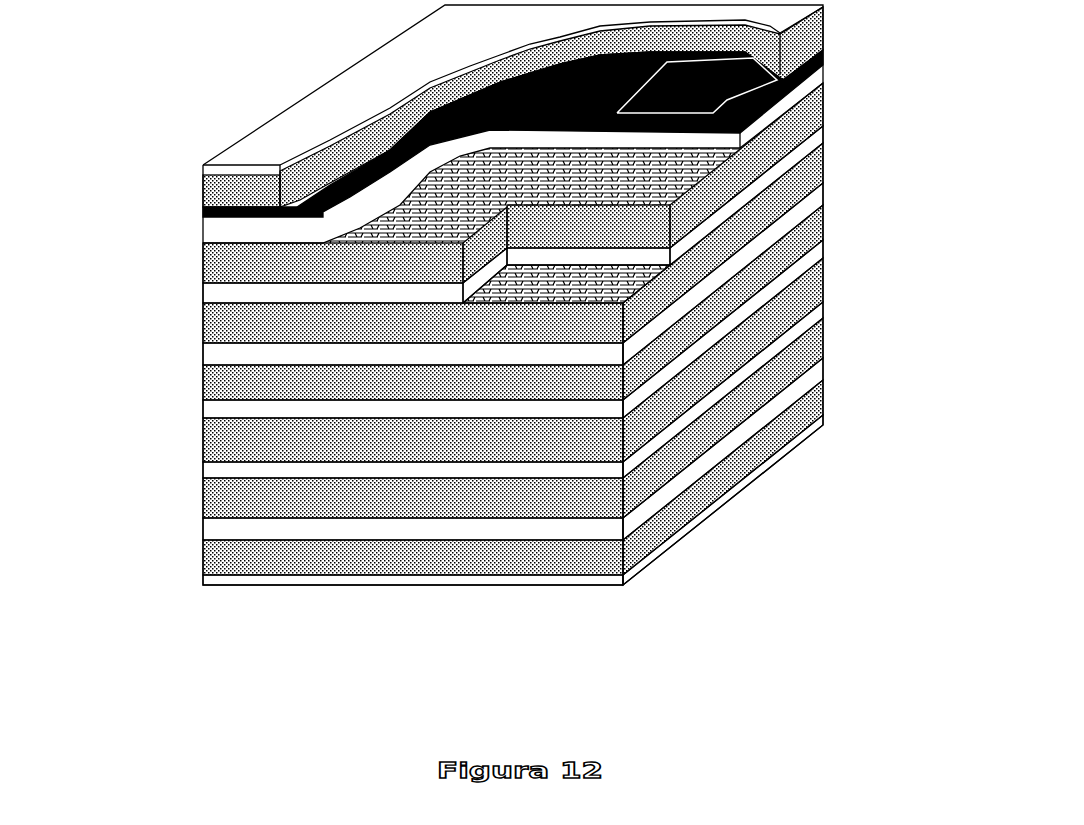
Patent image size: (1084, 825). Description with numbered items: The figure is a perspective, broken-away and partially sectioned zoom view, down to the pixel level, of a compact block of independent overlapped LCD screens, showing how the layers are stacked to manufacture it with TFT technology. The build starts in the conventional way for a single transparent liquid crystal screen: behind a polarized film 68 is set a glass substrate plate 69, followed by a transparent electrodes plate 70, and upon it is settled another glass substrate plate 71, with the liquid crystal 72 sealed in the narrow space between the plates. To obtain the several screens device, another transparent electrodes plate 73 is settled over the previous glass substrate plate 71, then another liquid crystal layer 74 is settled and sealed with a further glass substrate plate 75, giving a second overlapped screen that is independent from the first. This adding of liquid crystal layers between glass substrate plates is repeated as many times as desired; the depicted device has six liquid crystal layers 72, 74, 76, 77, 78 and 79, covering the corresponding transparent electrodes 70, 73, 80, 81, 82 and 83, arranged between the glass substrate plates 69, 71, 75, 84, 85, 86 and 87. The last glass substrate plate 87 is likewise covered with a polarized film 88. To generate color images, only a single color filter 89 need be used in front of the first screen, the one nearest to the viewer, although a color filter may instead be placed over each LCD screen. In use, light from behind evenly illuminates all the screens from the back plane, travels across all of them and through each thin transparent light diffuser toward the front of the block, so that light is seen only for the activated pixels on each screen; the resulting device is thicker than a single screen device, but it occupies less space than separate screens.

The polarized film 68 is at (823, 12).
The glass substrate plate 69 is at (823, 52).
The color filter 89 is at (745, 97).
The liquid crystal 72 is at (762, 124).
The transparent electrodes plate 70 is at (467, 240).
The glass substrate plate 71 is at (748, 162).
The liquid crystal layer 74 is at (762, 192).
The transparent electrodes plate 73 is at (515, 298).
The glass substrate plate 75 is at (770, 222).
The transparent electrodes 80 is at (203, 364).
The liquid crystal layer 76 is at (752, 250).
The glass substrate plate 84 is at (203, 392).
The transparent electrodes 81 is at (203, 422).
The liquid crystal layer 77 is at (770, 292).
The glass substrate plate 85 is at (203, 452).
The transparent electrodes 82 is at (203, 480).
The liquid crystal layer 78 is at (818, 320).
The glass substrate plate 86 is at (203, 507).
The transparent electrodes 83 is at (203, 536).
The liquid crystal layer 79 is at (818, 378).
The glass substrate plate 87 is at (203, 564).
The polarized film 88 is at (765, 475).